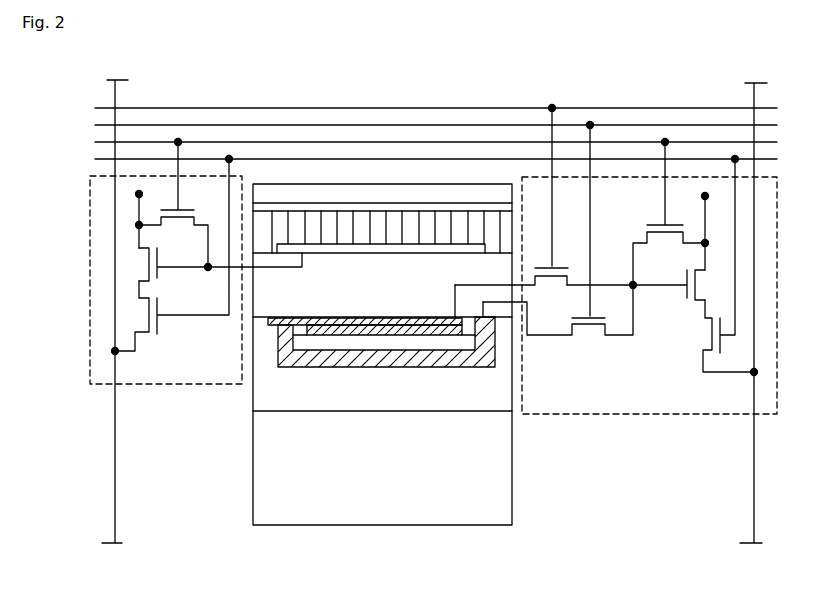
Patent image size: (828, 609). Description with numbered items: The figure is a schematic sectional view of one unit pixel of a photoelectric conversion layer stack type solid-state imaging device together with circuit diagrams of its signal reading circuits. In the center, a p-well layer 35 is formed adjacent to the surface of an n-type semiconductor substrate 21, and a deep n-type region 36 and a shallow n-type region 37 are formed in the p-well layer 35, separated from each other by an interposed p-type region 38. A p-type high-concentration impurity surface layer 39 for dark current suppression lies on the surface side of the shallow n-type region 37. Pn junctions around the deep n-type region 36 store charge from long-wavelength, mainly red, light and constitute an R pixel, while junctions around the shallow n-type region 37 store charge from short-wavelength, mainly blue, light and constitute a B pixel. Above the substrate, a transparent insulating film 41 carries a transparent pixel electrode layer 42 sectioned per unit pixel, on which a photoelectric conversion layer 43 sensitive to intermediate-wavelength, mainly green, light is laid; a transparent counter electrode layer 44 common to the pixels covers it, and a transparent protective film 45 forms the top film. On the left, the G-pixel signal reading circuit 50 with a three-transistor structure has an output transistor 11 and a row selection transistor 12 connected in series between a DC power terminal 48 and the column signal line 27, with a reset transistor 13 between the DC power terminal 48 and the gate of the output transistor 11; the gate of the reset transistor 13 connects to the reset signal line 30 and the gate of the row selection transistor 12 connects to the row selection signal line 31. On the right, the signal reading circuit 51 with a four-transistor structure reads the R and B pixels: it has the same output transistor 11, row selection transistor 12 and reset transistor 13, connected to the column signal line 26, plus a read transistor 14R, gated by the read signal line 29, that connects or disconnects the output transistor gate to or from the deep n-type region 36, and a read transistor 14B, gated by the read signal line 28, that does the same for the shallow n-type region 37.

The output transistor 11 is at (158, 275).
The row selection transistor 12 is at (156, 327).
The reset transistor 13 is at (177, 223).
The read transistor 14B is at (547, 287).
The read transistor 14R is at (586, 337).
The n-type semiconductor substrate 21 is at (340, 536).
The column signal line 26 is at (751, 510).
The column signal line 27 is at (113, 434).
The read signal line 28 is at (107, 108).
The read signal line 29 is at (107, 125).
The reset signal line 30 is at (107, 142).
The row selection signal line 31 is at (107, 159).
The p-well layer 35 is at (310, 402).
The n-type region 36 is at (328, 363).
The n-type region 37 is at (349, 318).
The p-type region 38 is at (385, 345).
The p-type high-concentration impurity surface layer 39 is at (392, 318).
The transparent insulating film 41 is at (272, 300).
The transparent pixel electrode layer 42 is at (432, 246).
The photoelectric conversion layer 43 is at (342, 233).
The transparent counter electrode layer 44 is at (378, 211).
The transparent protective film 45 is at (383, 190).
The DC power terminal 48 is at (141, 194).
The signal reading circuit 50 is at (153, 385).
The signal reading circuit 51 is at (643, 414).